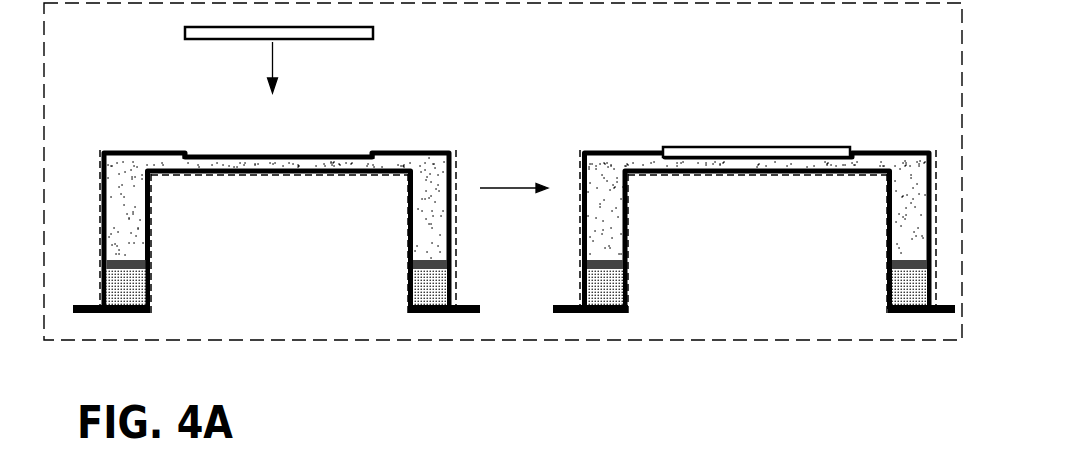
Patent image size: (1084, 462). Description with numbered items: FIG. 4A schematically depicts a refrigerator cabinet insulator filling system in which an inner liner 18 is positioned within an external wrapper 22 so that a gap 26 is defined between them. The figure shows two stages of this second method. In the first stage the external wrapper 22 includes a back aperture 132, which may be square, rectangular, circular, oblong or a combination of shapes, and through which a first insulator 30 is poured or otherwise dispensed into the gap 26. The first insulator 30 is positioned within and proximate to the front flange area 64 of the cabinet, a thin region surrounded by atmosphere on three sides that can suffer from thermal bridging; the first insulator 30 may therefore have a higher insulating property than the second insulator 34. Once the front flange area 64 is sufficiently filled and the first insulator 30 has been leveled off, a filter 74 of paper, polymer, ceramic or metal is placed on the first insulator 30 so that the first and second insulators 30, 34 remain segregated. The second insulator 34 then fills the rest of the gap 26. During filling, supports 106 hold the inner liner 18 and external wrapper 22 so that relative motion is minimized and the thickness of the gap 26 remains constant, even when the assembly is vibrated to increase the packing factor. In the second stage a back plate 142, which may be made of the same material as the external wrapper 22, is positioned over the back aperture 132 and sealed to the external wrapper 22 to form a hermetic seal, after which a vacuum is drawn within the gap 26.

The inner liner 18 is at (893, 314).
The external wrapper 22 is at (925, 151).
The gap 26 is at (914, 207).
The first insulator 30 is at (430, 298).
The second insulator 34 is at (875, 161).
The front flange area 64 is at (411, 312).
The filter 74 is at (409, 266).
The supports 106 is at (146, 220).
The back aperture 132 is at (349, 156).
The back plate 142 is at (185, 33).